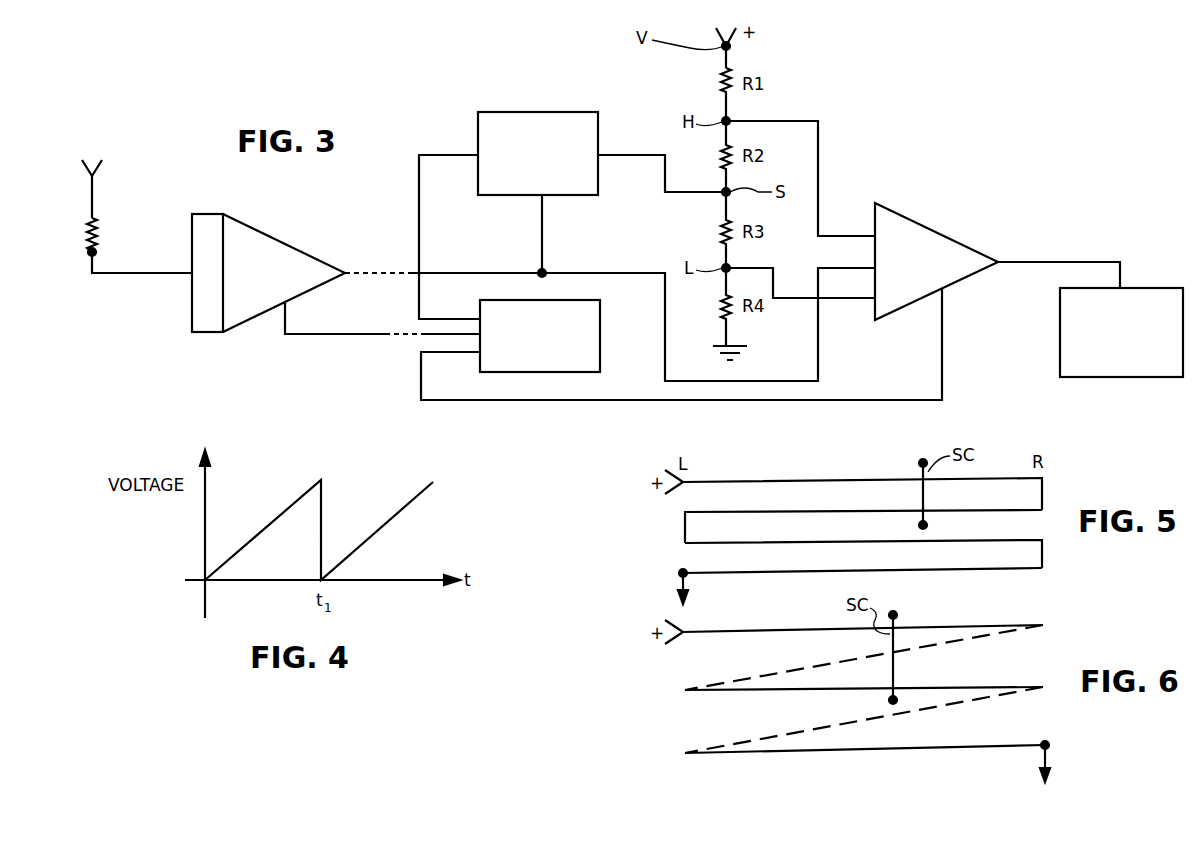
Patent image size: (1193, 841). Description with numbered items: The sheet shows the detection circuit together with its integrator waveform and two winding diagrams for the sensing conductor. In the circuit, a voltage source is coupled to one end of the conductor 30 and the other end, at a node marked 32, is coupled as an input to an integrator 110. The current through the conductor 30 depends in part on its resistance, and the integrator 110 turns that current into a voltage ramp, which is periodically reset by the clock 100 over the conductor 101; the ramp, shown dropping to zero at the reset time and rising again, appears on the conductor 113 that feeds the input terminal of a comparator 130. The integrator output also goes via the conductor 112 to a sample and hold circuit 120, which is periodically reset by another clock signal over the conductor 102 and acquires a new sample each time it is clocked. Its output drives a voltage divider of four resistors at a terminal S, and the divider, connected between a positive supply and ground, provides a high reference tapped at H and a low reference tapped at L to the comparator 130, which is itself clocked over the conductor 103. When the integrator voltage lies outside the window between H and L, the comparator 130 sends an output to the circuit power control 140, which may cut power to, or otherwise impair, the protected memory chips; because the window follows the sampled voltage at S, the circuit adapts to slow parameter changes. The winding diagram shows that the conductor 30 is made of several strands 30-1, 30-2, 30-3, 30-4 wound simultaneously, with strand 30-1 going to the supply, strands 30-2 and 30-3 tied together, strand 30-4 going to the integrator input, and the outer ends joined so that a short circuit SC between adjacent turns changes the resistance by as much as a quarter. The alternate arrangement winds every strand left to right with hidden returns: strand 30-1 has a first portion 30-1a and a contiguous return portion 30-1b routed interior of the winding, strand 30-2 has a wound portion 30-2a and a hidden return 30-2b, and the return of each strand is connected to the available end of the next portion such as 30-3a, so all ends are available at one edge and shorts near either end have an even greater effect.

In FIG. 3, the conductor 30 is at (100, 232).
In FIG. 3, the output terminal node 32 is at (90, 251).
In FIG. 5, the output terminal node 32 is at (669, 583).
In FIG. 6, the output terminal node 32 is at (1062, 758).
In FIG. 3, the integrator 110 is at (272, 240).
In FIG. 3, the conductor 113 is at (588, 270).
In FIG. 3, the conductor 101 is at (352, 338).
In FIG. 3, the conductor 102 is at (419, 218).
In FIG. 3, the sample and hold circuit 120 is at (536, 112).
In FIG. 3, the conductor 112 is at (540, 220).
In FIG. 3, the clock 100 is at (596, 346).
In FIG. 3, the conductor 103 is at (942, 367).
In FIG. 3, the comparator 130 is at (944, 238).
In FIG. 3, the circuit power control 140 is at (1062, 360).
In FIG. 5, the strand 30-1 is at (868, 478).
In FIG. 5, the strand 30-2 is at (868, 510).
In FIG. 5, the strand 30-3 is at (866, 541).
In FIG. 5, the strand 30-4 is at (870, 572).
In FIG. 6, the first portion 30-1a is at (776, 628).
In FIG. 6, the return portion 30-1b is at (786, 668).
In FIG. 6, the strand portion 30-2a is at (962, 686).
In FIG. 6, the hidden return 30-2b is at (788, 730).
In FIG. 6, the strand portion 30-3a is at (930, 746).